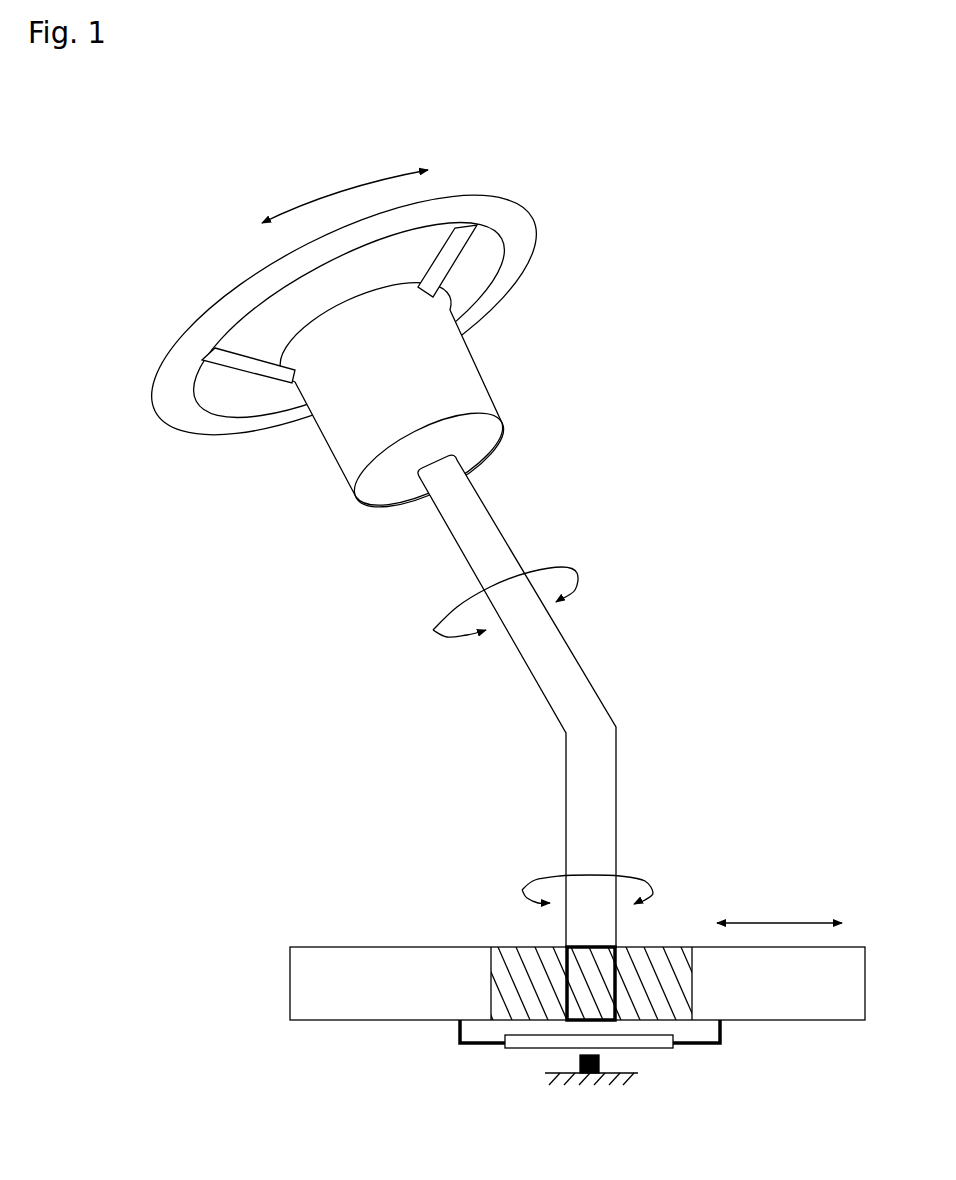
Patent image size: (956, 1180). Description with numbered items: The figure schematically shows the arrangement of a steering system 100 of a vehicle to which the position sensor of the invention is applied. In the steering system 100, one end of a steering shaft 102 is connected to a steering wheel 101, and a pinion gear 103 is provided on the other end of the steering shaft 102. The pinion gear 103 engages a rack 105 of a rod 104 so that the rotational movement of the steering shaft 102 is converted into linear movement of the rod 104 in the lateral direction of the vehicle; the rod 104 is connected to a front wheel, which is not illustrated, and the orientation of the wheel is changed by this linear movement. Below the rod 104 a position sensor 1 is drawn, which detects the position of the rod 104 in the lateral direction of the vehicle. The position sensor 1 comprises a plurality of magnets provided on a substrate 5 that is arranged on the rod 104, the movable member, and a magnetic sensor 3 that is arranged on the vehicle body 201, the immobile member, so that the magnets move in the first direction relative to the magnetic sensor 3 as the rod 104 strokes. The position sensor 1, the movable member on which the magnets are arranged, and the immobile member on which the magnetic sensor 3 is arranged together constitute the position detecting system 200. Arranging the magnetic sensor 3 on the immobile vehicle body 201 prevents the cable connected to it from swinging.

The steering system 100 is at (492, 152).
The steering wheel 101 is at (531, 229).
The steering shaft 102 is at (573, 671).
The pinion gear 103 is at (598, 947).
The rod 104 is at (394, 962).
The rack 105 is at (533, 953).
The position detecting system 200 is at (703, 843).
The position sensor 1 is at (515, 1080).
The substrate 5 is at (532, 1044).
The magnetic sensor 3 is at (599, 1062).
The vehicle body 201 is at (565, 1066).